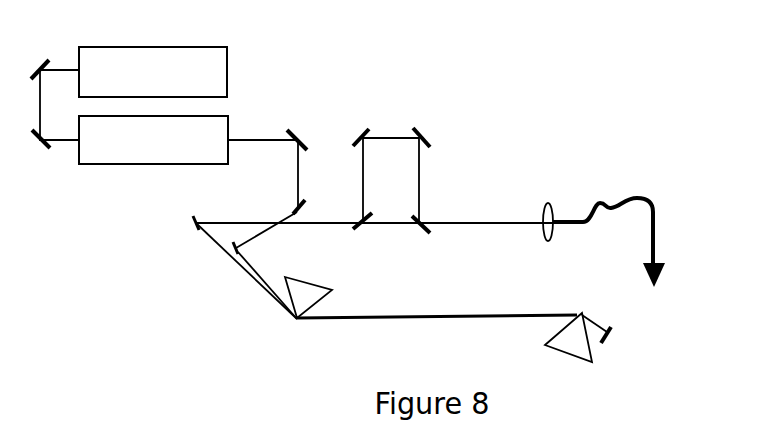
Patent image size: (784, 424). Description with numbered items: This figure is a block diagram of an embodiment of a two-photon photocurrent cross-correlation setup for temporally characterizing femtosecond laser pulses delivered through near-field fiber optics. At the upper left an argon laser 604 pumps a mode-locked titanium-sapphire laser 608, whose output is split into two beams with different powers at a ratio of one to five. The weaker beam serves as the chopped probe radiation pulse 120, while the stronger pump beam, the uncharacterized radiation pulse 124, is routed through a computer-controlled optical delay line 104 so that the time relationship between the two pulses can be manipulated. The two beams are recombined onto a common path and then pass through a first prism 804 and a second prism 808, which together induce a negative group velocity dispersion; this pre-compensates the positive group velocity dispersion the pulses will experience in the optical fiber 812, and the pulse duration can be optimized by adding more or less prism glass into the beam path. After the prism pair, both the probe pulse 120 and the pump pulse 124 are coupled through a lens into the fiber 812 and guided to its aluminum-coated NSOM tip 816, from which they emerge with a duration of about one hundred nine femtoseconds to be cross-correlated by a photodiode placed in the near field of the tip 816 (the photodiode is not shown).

The argon laser 604 is at (212, 50).
The titanium-sapphire laser 608 is at (105, 158).
The optical delay line 104 is at (432, 136).
The uncharacterized radiation pulse 124 is at (420, 168).
The probe radiation pulse 120 is at (391, 224).
The first prism 804 is at (332, 290).
The second prism 808 is at (548, 342).
The optical fiber 812 is at (655, 208).
The NSOM tip 816 is at (655, 287).